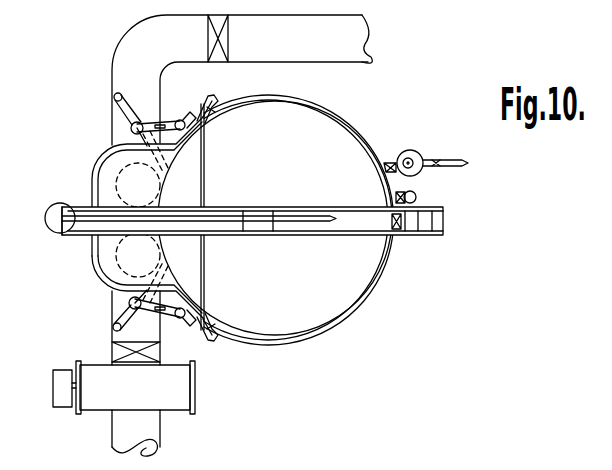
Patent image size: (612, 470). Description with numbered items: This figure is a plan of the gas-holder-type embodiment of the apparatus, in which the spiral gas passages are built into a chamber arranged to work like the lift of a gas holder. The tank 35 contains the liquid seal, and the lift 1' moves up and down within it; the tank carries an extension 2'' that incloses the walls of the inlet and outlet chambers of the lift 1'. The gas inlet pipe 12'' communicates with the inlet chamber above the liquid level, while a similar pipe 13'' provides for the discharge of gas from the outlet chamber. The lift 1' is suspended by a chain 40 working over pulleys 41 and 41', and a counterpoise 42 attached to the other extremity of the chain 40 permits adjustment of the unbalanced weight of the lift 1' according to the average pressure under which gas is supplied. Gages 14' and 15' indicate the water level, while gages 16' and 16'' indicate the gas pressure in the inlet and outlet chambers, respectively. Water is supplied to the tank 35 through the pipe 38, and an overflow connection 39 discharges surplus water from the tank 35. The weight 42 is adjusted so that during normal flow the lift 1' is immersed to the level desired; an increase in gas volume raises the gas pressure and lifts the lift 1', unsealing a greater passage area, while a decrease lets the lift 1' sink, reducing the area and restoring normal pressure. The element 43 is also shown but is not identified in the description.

The lift 1' is at (275, 218).
The extension of tank 2'' is at (133, 217).
The gas inlet pipe 12'' is at (145, 373).
The gas discharge pipe 13'' is at (242, 80).
The gage 14' is at (134, 119).
The gage 15' is at (133, 309).
The gas pressure gage 16'' is at (191, 105).
The gas pressure gage 16' is at (191, 333).
The tank 35 is at (377, 286).
The water supply pipe 38 is at (389, 161).
The overflow connection 39 is at (414, 195).
The chain 40 is at (252, 234).
The pulley 41 is at (199, 239).
The pulley 41' is at (51, 232).
The counterpoise 42 is at (50, 212).
The cylinder 43 is at (124, 387).